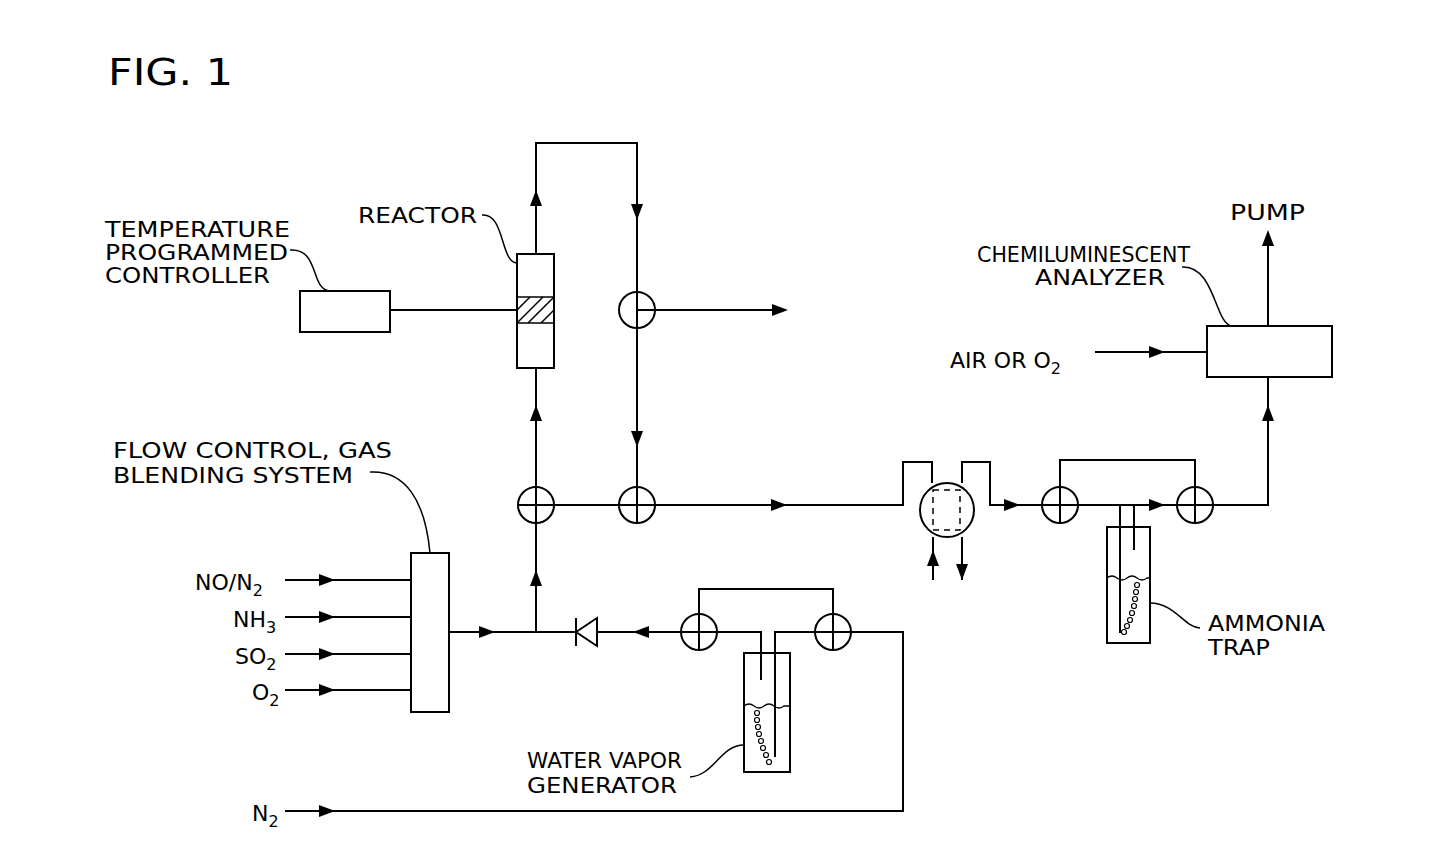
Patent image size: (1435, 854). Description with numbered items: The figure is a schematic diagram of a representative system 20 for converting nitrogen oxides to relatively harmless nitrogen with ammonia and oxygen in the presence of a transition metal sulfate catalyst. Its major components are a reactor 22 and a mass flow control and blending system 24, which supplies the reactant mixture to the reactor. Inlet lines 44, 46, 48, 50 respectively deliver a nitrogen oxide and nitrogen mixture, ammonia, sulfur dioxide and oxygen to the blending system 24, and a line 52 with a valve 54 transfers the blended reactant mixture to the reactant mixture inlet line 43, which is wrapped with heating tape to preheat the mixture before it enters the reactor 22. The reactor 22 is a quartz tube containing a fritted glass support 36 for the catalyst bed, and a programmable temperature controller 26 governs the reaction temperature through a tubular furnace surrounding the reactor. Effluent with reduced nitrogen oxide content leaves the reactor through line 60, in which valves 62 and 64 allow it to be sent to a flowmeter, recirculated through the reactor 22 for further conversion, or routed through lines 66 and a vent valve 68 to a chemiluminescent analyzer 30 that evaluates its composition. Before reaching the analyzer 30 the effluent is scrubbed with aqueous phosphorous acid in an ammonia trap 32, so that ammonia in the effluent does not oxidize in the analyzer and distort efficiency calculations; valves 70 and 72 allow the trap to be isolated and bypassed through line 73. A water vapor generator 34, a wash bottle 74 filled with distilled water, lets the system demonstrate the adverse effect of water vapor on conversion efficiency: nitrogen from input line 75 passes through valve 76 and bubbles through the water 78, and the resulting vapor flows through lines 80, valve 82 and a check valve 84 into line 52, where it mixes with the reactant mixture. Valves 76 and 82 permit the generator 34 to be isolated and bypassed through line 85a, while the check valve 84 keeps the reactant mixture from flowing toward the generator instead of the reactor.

The system 20 is at (378, 143).
The reactor 22 is at (503, 352).
The mass flow control and blending system 24 is at (420, 722).
The programmable temperature controller 26 is at (350, 333).
The chemiluminescent NOx analyzer 30 is at (1332, 352).
The ammonia scrubber 32 is at (1128, 645).
The water vapor generator 34 is at (800, 770).
The fritted glass support 36 is at (554, 312).
The reactant mixture inlet line 43 is at (536, 437).
The inlet line 44 is at (345, 580).
The inlet line 46 is at (383, 617).
The inlet line 48 is at (380, 654).
The inlet line 50 is at (350, 690).
The line 52 is at (532, 607).
The valve 54 is at (548, 492).
The line 60 is at (637, 167).
The valve 62 is at (650, 297).
The valve 64 is at (648, 492).
The lines 66 is at (868, 498).
The vent valve 68 is at (922, 517).
The valve 70 is at (1060, 523).
The valve 72 is at (1207, 517).
The line 73 is at (1117, 460).
The wash bottle 74 is at (744, 687).
The input line 75 is at (903, 722).
The valve 76 is at (848, 622).
The water 78 is at (770, 727).
The lines 80 is at (686, 618).
The valve 82 is at (697, 650).
The check valve 84 is at (577, 618).
The line 85a is at (775, 589).